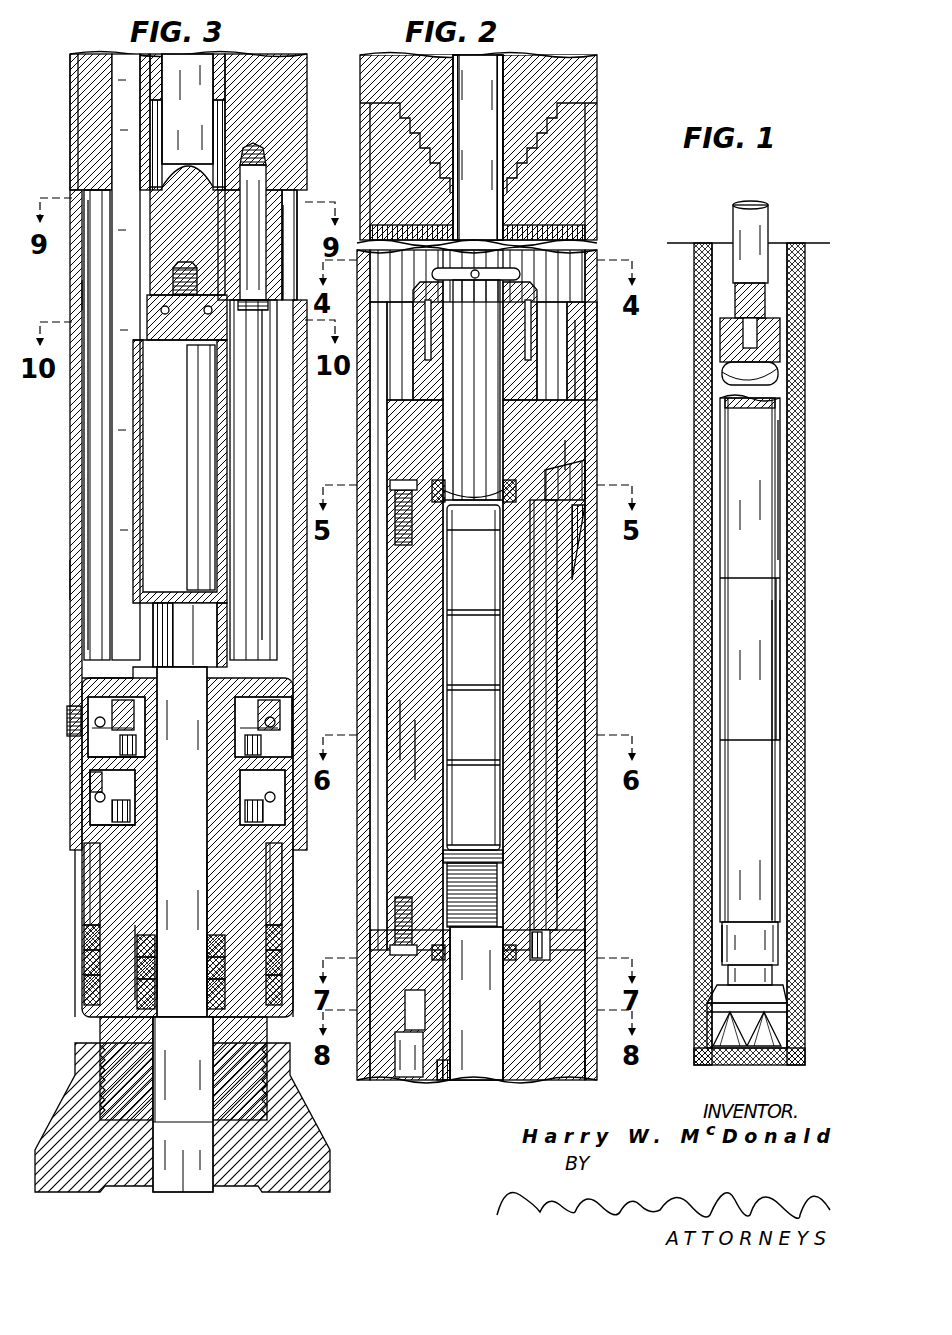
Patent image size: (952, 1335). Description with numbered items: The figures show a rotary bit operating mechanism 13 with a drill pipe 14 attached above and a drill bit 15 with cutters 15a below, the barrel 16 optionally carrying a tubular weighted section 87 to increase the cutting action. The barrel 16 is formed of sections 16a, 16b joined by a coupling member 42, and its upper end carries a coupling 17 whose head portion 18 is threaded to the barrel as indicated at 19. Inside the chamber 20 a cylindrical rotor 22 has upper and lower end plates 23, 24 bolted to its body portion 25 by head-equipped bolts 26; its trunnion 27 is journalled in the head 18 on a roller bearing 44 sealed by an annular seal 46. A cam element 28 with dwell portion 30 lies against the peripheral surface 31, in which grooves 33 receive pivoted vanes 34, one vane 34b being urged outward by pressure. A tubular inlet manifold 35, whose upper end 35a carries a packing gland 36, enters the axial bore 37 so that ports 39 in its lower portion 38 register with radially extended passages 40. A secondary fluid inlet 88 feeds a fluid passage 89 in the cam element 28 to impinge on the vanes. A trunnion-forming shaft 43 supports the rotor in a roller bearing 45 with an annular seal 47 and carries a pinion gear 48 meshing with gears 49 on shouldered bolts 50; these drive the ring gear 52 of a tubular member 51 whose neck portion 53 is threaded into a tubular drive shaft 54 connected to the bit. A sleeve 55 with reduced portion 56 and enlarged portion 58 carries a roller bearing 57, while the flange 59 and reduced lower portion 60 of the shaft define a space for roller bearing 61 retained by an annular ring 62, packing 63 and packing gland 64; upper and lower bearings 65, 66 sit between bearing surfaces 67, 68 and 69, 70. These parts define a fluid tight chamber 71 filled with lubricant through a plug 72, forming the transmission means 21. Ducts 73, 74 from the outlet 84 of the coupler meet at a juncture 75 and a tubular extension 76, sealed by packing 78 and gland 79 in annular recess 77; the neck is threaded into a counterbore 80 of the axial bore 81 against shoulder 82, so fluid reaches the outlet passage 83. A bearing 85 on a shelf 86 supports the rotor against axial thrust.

In FIG. 3, the rotary bit operating mechanism 13 is at (311, 78).
In FIG. 2, the rotary bit operating mechanism 13 is at (607, 106).
In FIG. 1, the rotary bit operating mechanism 13 is at (788, 608).
In FIG. 1, the drill pipe 14 is at (770, 228).
In FIG. 3, the drill bit 15 is at (312, 1148).
In FIG. 1, the drill bit 15 is at (781, 996).
In FIG. 1, the cutters 15a is at (757, 1050).
In FIG. 3, the barrel 16 is at (68, 600).
In FIG. 2, the barrel 16 is at (598, 641).
In FIG. 1, the barrel 16 is at (783, 657).
In FIG. 3, the barrel section 16a is at (72, 60).
In FIG. 2, the barrel section 16a is at (596, 862).
In FIG. 1, the barrel section 16a is at (769, 685).
In FIG. 3, the barrel section 16b is at (70, 577).
In FIG. 2, the barrel section 16b is at (597, 1080).
In FIG. 1, the barrel section 16b is at (770, 805).
In FIG. 2, the coupling 17 is at (597, 357).
In FIG. 1, the coupling 17 is at (776, 535).
In FIG. 2, the head portion 18 is at (597, 381).
In FIG. 2, the screw threaded engagement 19 is at (590, 441).
In FIG. 2, the chamber 20 is at (378, 632).
In FIG. 3, the transmission means 21 is at (72, 292).
In FIG. 2, the cylindrical rotor 22 is at (385, 664).
In FIG. 2, the upper end plate 23 is at (390, 512).
In FIG. 2, the lower end plate 24 is at (385, 940).
In FIG. 2, the body portion 25 is at (405, 735).
In FIG. 2, the head-equipped bolts 26 is at (394, 497).
In FIG. 2, the trunnion 27 is at (430, 410).
In FIG. 2, the cam element 28 is at (572, 692).
In FIG. 2, the dwell portion 30 is at (560, 718).
In FIG. 2, the peripheral surface 31 is at (388, 712).
In FIG. 2, the grooves 33 is at (535, 620).
In FIG. 2, the vanes 34 is at (565, 512).
In FIG. 2, the vane 34b is at (553, 838).
In FIG. 2, the tubular inlet manifold 35 is at (440, 590).
In FIG. 2, the upper end 35a is at (520, 276).
In FIG. 2, the packing gland 36 is at (533, 300).
In FIG. 2, the axial bore 37 is at (450, 630).
In FIG. 2, the lower portion 38 is at (445, 798).
In FIG. 2, the ports 39 is at (473, 645).
In FIG. 2, the radially extended passages 40 is at (502, 654).
In FIG. 3, the coupling member 42 is at (92, 116).
In FIG. 2, the coupling member 42 is at (550, 1072).
In FIG. 3, the trunnion-forming shaft 43 is at (187, 109).
In FIG. 2, the trunnion-forming shaft 43 is at (471, 1085).
In FIG. 2, the roller bearing 44 is at (522, 413).
In FIG. 3, the roller bearing 45 is at (160, 118).
In FIG. 2, the roller bearing 45 is at (439, 1085).
In FIG. 2, the annular seal 46 is at (445, 496).
In FIG. 2, the annular seal 47 is at (492, 968).
In FIG. 3, the pinion gear 48 is at (222, 228).
In FIG. 3, the gears 49 is at (286, 206).
In FIG. 3, the shouldered bolts 50 is at (266, 335).
In FIG. 3, the tubular member 51 is at (73, 482).
In FIG. 3, the ring gear 52 is at (97, 250).
In FIG. 3, the neck portion 53 is at (142, 852).
In FIG. 3, the tubular drive shaft 54 is at (97, 1024).
In FIG. 1, the tubular drive shaft 54 is at (779, 970).
In FIG. 3, the sleeve 55 is at (74, 915).
In FIG. 1, the sleeve 55 is at (779, 945).
In FIG. 3, the diametrically reduced portion 56 is at (120, 736).
In FIG. 3, the roller bearing 57 is at (130, 752).
In FIG. 3, the diametrically enlarged portion 58 is at (75, 892).
In FIG. 1, the diametrically enlarged portion 58 is at (722, 950).
In FIG. 3, the flange 59 is at (88, 832).
In FIG. 3, the reduced lower portion 60 is at (95, 872).
In FIG. 3, the roller bearing 61 is at (276, 883).
In FIG. 3, the annular ring 62 is at (78, 930).
In FIG. 3, the packing 63 is at (85, 952).
In FIG. 3, the packing gland 64 is at (88, 990).
In FIG. 3, the upper bearing 65 is at (92, 698).
In FIG. 3, the lower bearing 66 is at (92, 790).
In FIG. 3, the bearing surface 67 is at (124, 668).
In FIG. 3, the bearing surface 68 is at (96, 740).
In FIG. 3, the bearing surface 69 is at (88, 776).
In FIG. 3, the bearing surface 70 is at (110, 818).
In FIG. 2, the fluid tight chamber 71 is at (387, 690).
In FIG. 3, the plug 72 is at (70, 712).
In FIG. 3, the duct 73 is at (130, 480).
In FIG. 3, the duct 74 is at (245, 462).
In FIG. 3, the juncture 75 is at (202, 626).
In FIG. 3, the tubular extension 76 is at (182, 842).
In FIG. 3, the annular recess 77 is at (150, 940).
In FIG. 3, the packing 78 is at (150, 962).
In FIG. 3, the packing gland 79 is at (150, 984).
In FIG. 3, the counterbore 80 is at (132, 928).
In FIG. 3, the axial bore 81 is at (183, 1104).
In FIG. 3, the shoulder 82 is at (180, 1010).
In FIG. 3, the axial fluid outlet passage 83 is at (183, 1180).
In FIG. 2, the circumferentially extended outlet 84 is at (417, 1015).
In FIG. 3, the bearing 85 is at (230, 342).
In FIG. 3, the shelf 86 is at (180, 345).
In FIG. 1, the tubular weighted section 87 is at (781, 367).
In FIG. 2, the secondary fluid inlet 88 is at (576, 470).
In FIG. 2, the fluid passage 89 is at (578, 553).